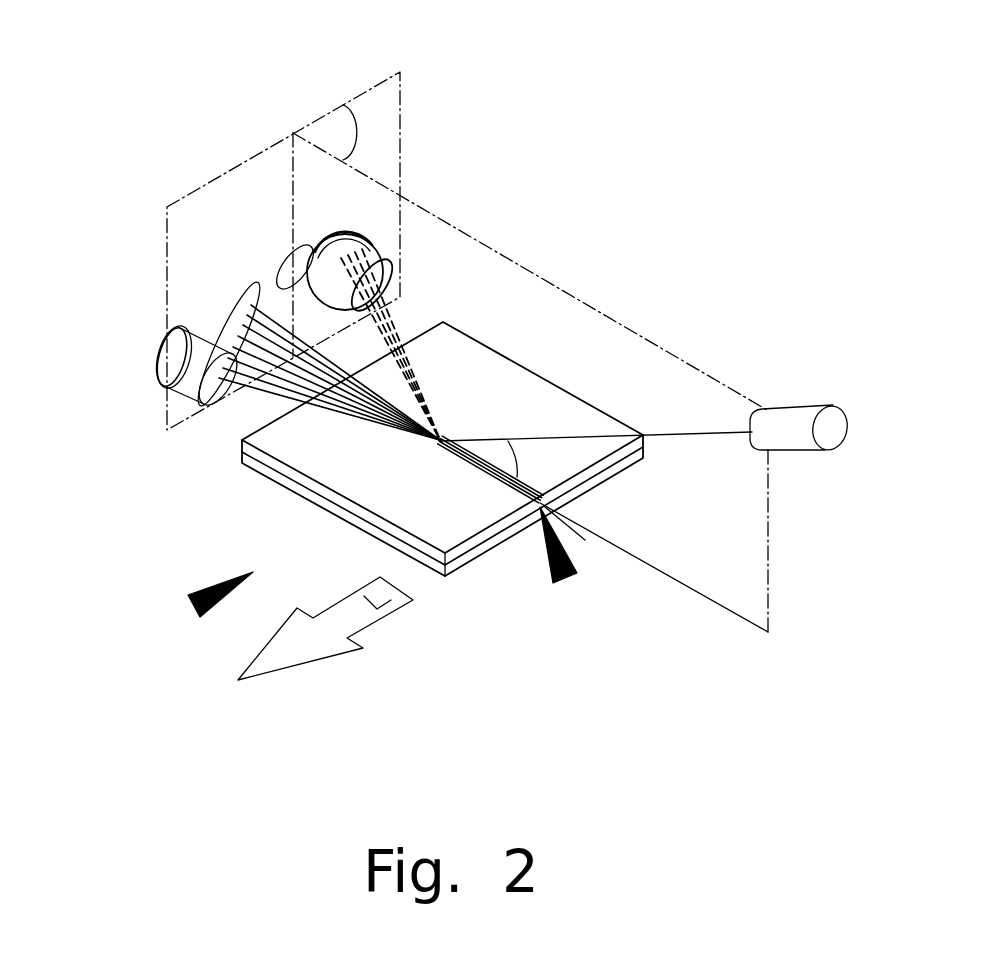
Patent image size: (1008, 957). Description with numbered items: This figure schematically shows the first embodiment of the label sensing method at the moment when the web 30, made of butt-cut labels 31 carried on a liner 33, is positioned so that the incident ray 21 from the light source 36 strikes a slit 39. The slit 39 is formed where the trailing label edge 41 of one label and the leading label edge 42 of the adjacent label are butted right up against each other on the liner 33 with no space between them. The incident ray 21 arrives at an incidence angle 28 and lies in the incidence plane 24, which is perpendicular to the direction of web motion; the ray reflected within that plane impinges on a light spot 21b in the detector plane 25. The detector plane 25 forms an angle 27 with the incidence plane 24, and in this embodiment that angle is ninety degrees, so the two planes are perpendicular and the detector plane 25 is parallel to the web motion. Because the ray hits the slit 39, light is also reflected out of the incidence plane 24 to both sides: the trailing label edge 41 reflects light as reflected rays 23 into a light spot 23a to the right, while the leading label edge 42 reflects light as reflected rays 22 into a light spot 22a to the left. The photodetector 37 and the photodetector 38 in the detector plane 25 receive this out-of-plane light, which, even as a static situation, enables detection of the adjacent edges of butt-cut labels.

The incident ray 21 is at (570, 287).
The light spot 21b is at (228, 197).
The reflected rays 22 is at (258, 392).
The light spot 22a is at (158, 338).
The reflected rays 23 is at (463, 320).
The light spot 23a is at (449, 216).
The incidence plane 24 is at (702, 596).
The detector plane 25 is at (313, 225).
The angle 27 is at (452, 106).
The incidence angle 28 is at (517, 476).
The web 30 is at (194, 606).
The label 31 is at (368, 483).
The liner 33 is at (280, 481).
The light source 36 is at (807, 408).
The photodetector 37 is at (152, 363).
The photodetector 38 is at (523, 220).
The slit 39 is at (565, 578).
The trailing label edge 41 is at (538, 512).
The leading label edge 42 is at (546, 509).